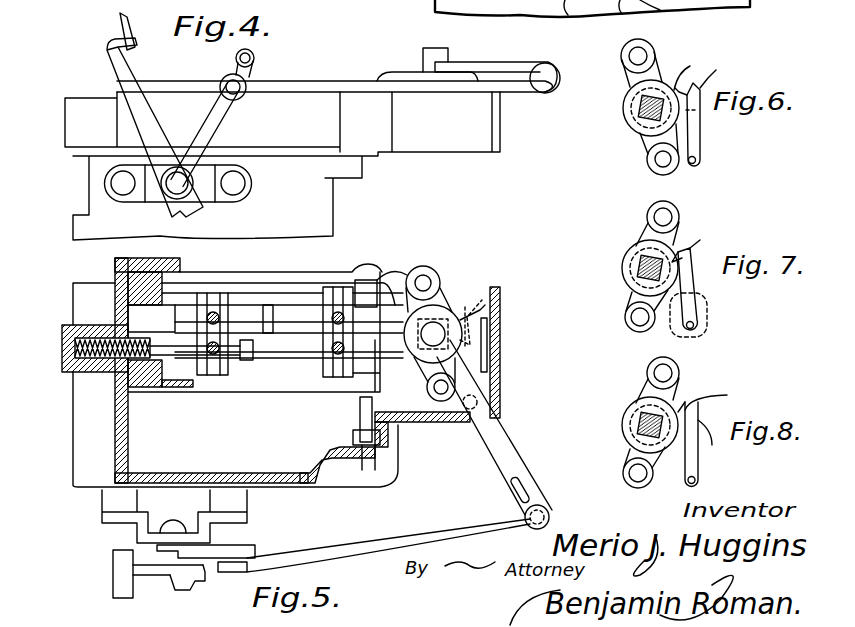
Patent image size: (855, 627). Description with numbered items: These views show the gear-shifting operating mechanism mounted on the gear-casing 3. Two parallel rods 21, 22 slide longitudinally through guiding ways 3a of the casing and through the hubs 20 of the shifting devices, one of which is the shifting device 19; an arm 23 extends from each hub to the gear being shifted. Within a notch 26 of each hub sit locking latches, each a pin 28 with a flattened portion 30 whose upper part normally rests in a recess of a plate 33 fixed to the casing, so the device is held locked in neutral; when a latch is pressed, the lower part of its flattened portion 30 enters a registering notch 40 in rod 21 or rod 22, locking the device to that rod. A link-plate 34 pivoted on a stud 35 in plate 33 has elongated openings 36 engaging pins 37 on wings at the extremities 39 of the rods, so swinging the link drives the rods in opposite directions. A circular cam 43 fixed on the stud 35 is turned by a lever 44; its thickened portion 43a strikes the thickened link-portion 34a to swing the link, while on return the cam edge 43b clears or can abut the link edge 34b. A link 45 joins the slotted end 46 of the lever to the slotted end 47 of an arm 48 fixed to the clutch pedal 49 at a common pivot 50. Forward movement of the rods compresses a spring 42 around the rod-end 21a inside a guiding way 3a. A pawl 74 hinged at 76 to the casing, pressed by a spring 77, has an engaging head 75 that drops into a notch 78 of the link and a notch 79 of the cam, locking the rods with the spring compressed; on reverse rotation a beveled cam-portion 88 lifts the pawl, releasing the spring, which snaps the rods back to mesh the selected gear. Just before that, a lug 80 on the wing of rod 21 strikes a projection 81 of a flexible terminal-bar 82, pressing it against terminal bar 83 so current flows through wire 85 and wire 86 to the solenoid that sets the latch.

In FIG. 4, the gear-casing 3 is at (341, 197).
In FIG. 5, the gear-casing 3 is at (286, 372).
In FIG. 5, the guiding ways 3a is at (130, 283).
In FIG. 5, the shifting device 19 is at (300, 394).
In FIG. 5, the hub 20 is at (211, 300).
In FIG. 5, the rod 21 is at (246, 361).
In FIG. 5, the rod-end 21a is at (160, 391).
In FIG. 5, the rod 22 is at (276, 310).
In FIG. 5, the arm 23 is at (142, 330).
In FIG. 5, the notch 26 is at (395, 305).
In FIG. 5, the pin 28 is at (208, 354).
In FIG. 5, the flattened portion 30 is at (330, 300).
In FIG. 4, the plate 33 is at (406, 75).
In FIG. 5, the link-plate 34 is at (440, 292).
In FIG. 6, the link-plate 34 is at (648, 160).
In FIG. 7, the link-plate 34 is at (672, 210).
In FIG. 8, the link-plate 34 is at (652, 470).
In FIG. 6, the thickened portion of link 34a is at (700, 118).
In FIG. 8, the thickened portion of link 34a is at (678, 405).
In FIG. 6, the edge of link-portion 34b is at (624, 49).
In FIG. 7, the edge of link-portion 34b is at (709, 325).
In FIG. 8, the edge of link-portion 34b is at (675, 400).
In FIG. 4, the stud 35 is at (432, 50).
In FIG. 5, the stud 35 is at (433, 334).
In FIG. 6, the stud 35 is at (640, 112).
In FIG. 7, the stud 35 is at (640, 272).
In FIG. 8, the stud 35 is at (640, 430).
In FIG. 6, the elongated openings 36 is at (648, 56).
In FIG. 7, the elongated openings 36 is at (630, 320).
In FIG. 8, the elongated openings 36 is at (655, 368).
In FIG. 5, the pins 37 is at (426, 283).
In FIG. 5, the extremities of rods 39 is at (410, 282).
In FIG. 5, the notches 40 is at (176, 310).
In FIG. 5, the spring 42 is at (66, 336).
In FIG. 5, the circular cam 43 is at (460, 326).
In FIG. 6, the thickened portion of cam 43a is at (622, 100).
In FIG. 7, the thickened portion of cam 43a is at (625, 262).
In FIG. 8, the thickened portion of cam 43a is at (622, 422).
In FIG. 6, the edge of cam-portion 43b is at (626, 90).
In FIG. 7, the edge of cam-portion 43b is at (635, 245).
In FIG. 8, the edge of cam-portion 43b is at (635, 405).
In FIG. 4, the lever 44 is at (492, 66).
In FIG. 5, the lever 44 is at (504, 440).
In FIG. 4, the link 45 is at (353, 86).
In FIG. 5, the link 45 is at (383, 550).
In FIG. 5, the slotted end of lever 46 is at (537, 505).
In FIG. 4, the slotted end of arm 47 is at (254, 65).
In FIG. 4, the arm 48 is at (221, 124).
In FIG. 5, the arm 48 is at (240, 548).
In FIG. 4, the pedal 49 is at (138, 103).
In FIG. 5, the pedal 49 is at (113, 573).
In FIG. 4, the common pivot 50 is at (160, 190).
In FIG. 5, the common pivot 50 is at (174, 585).
In FIG. 5, the pawl 74 is at (482, 372).
In FIG. 6, the pawl 74 is at (701, 143).
In FIG. 7, the pawl 74 is at (697, 300).
In FIG. 8, the pawl 74 is at (700, 462).
In FIG. 5, the engaging head 75 is at (472, 340).
In FIG. 6, the engaging head 75 is at (701, 96).
In FIG. 7, the engaging head 75 is at (686, 248).
In FIG. 8, the engaging head 75 is at (699, 408).
In FIG. 5, the hinge 76 is at (470, 440).
In FIG. 5, the spring 77 is at (488, 356).
In FIG. 5, the notch in link 78 is at (470, 300).
In FIG. 6, the notch in link 78 is at (689, 78).
In FIG. 8, the notch in link 78 is at (705, 440).
In FIG. 6, the notch in cam 79 is at (705, 88).
In FIG. 8, the notch in cam 79 is at (728, 396).
In FIG. 5, the lug 80 is at (436, 402).
In FIG. 5, the projection 81 is at (382, 436).
In FIG. 5, the terminal-bar 82 is at (390, 455).
In FIG. 5, the terminal bar 83 is at (360, 420).
In FIG. 5, the wire 85 is at (362, 476).
In FIG. 5, the wire 86 is at (378, 478).
In FIG. 7, the beveled cam-portion 88 is at (692, 255).